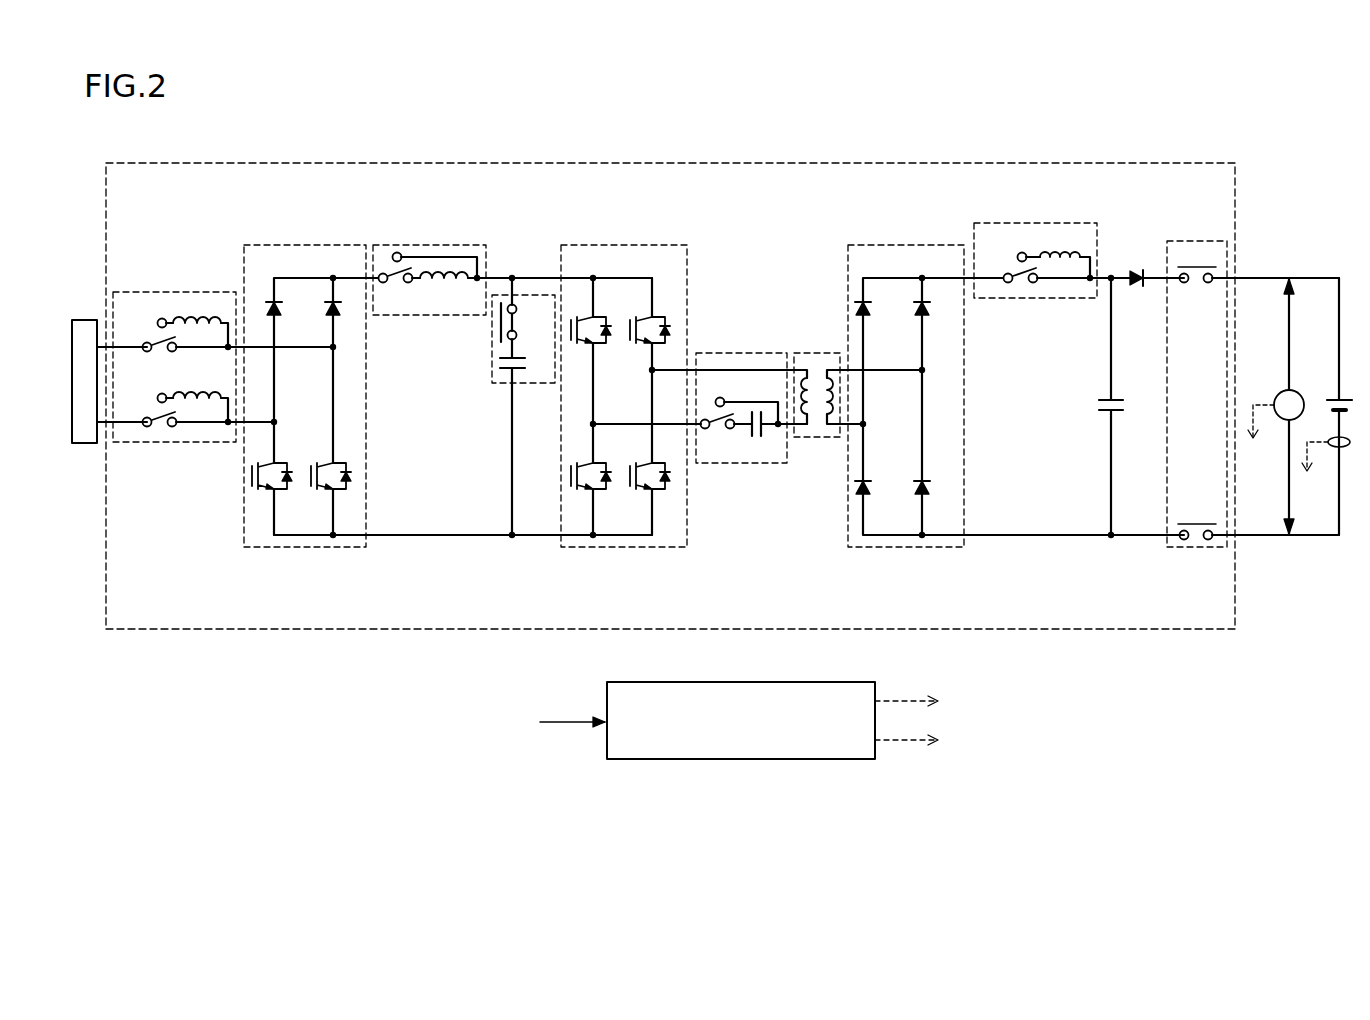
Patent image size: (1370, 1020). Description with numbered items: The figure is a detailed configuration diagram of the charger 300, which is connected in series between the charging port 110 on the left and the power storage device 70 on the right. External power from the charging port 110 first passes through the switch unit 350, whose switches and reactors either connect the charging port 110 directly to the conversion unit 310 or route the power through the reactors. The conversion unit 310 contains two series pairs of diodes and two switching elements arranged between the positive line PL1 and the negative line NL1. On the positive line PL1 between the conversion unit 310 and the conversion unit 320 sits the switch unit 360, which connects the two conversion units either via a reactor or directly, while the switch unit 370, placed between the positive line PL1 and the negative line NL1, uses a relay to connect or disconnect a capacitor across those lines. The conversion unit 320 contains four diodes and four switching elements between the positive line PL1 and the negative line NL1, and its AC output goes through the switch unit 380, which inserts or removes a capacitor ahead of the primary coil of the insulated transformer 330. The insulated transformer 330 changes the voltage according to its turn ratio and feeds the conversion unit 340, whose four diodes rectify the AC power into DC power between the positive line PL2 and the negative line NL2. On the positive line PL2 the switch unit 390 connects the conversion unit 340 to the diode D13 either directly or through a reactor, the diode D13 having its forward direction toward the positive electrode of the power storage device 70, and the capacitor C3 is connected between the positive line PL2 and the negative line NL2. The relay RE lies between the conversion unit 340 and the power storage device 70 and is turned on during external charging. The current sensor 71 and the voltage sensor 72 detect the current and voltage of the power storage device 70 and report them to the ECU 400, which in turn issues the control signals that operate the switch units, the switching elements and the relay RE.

The charger 300 is at (681, 163).
The charging port 110 is at (80, 445).
The switch unit 350 is at (193, 371).
The conversion unit 310 is at (306, 399).
The switch unit 360 is at (422, 281).
The switch unit 370 is at (528, 365).
The conversion unit 320 is at (624, 399).
The switch unit 380 is at (700, 411).
The insulated transformer 330 is at (813, 352).
The conversion unit 340 is at (907, 371).
The switch unit 390 is at (1016, 264).
The ECU 400 is at (738, 761).
The power storage device 70 is at (1351, 392).
The current sensor 71 is at (1346, 447).
The voltage sensor 72 is at (1275, 392).
The positive line PL1 is at (510, 274).
The negative line NL1 is at (430, 538).
The positive line PL2 is at (1151, 274).
The negative line NL2 is at (1017, 538).
The relay RE is at (1197, 399).
The diode D13 is at (1138, 292).
The capacitor C3 is at (1125, 408).